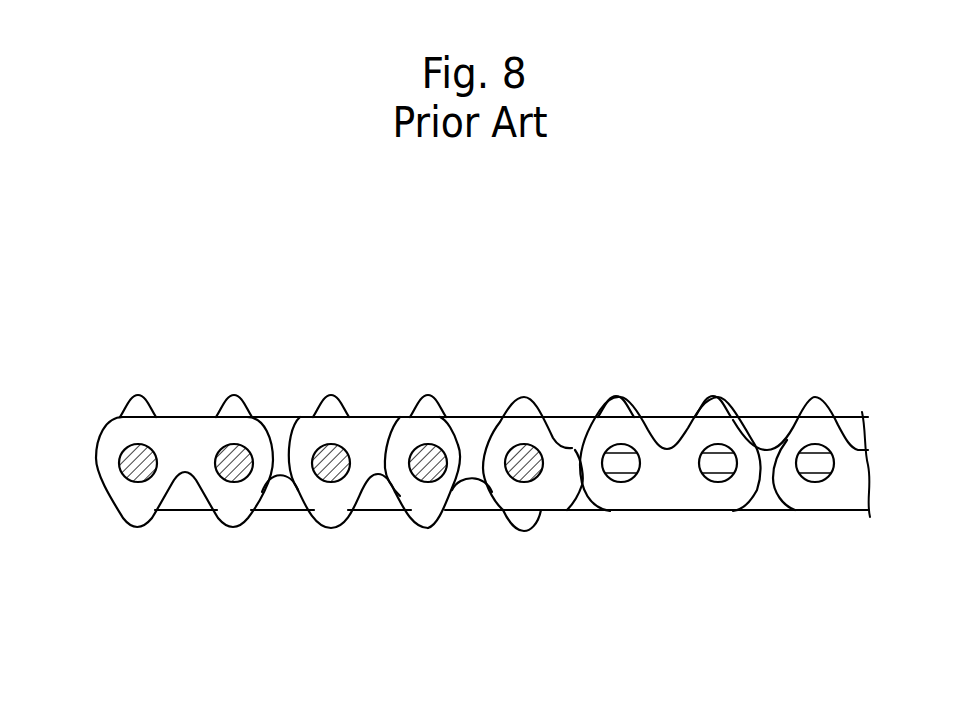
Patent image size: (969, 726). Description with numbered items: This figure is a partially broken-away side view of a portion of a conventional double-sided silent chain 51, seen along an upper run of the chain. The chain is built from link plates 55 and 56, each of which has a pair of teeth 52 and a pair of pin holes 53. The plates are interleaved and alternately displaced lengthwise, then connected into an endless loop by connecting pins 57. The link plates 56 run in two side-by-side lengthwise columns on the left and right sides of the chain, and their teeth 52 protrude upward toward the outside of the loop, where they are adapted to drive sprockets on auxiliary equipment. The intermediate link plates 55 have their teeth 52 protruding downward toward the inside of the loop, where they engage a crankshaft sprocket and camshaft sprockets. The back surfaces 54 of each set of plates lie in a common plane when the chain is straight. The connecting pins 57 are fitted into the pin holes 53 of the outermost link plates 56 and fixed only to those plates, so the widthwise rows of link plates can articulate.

The double-sided silent chain 51 is at (434, 358).
The teeth 52 is at (627, 413).
The pin holes 53 is at (605, 466).
The back surfaces 54 is at (170, 417).
The link plates 55 is at (193, 432).
The link plates 56 is at (570, 462).
The connecting pins 57 is at (320, 453).